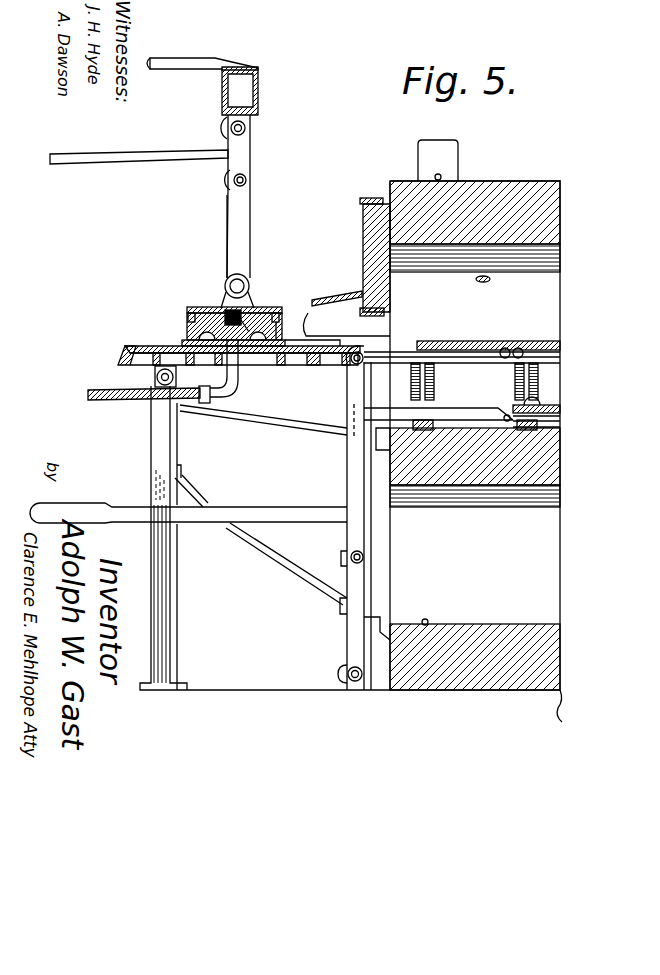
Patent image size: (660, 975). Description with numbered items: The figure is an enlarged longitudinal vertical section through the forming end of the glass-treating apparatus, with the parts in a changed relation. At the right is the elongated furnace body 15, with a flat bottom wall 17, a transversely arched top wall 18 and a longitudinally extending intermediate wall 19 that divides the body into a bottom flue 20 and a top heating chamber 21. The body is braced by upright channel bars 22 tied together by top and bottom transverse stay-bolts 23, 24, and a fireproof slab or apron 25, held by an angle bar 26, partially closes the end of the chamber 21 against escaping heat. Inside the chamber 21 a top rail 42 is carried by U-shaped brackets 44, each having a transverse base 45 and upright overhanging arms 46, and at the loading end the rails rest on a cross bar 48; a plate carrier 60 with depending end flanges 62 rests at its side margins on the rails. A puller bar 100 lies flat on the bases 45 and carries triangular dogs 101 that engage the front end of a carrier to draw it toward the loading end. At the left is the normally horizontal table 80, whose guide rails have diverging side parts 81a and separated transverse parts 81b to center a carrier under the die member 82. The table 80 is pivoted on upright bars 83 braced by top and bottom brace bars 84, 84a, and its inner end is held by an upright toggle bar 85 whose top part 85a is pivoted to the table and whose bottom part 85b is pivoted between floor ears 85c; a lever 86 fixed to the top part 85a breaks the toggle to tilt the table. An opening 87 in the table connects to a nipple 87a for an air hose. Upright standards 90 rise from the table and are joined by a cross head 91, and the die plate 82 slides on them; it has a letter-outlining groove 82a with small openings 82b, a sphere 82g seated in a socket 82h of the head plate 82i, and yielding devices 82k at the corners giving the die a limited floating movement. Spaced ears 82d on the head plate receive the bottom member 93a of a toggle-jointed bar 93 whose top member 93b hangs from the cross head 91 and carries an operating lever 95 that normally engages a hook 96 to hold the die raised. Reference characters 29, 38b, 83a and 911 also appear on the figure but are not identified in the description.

The furnace body 15 is at (521, 181).
The bottom wall 17 is at (486, 625).
The top wall 18 is at (561, 216).
The intermediate wall 19 is at (561, 456).
The bottom flue 20 is at (475, 513).
The top heating compartment or chamber 21 is at (475, 277).
The upright channel bars 22 is at (445, 140).
The top transverse stay-bolt 23 is at (442, 177).
The bottom transverse stay-bolt 24 is at (425, 619).
The fire proof slab or apron 25 is at (364, 219).
The angle bar 26 is at (371, 198).
The bracket bar 29 is at (340, 298).
The stud 38b is at (477, 281).
The top rail 42 is at (471, 360).
The U-shaped bracket 44 is at (436, 378).
The transverse base 45 is at (432, 420).
The upright overhanging arms 46 is at (436, 380).
The cross bar 48 is at (388, 410).
The plate carrier 60 is at (562, 345).
The end flange 62 is at (511, 348).
The table 80 is at (142, 344).
The side parts of guide bars 81a is at (301, 340).
The transverse parts of guide bars 81b is at (182, 341).
The die plate 82 is at (190, 310).
The groove 82a is at (205, 307).
The small openings 82b is at (291, 298).
The spaced ears 82d is at (221, 312).
The sphere 82g is at (220, 362).
The socket 82h is at (246, 308).
The head plate 82i is at (256, 328).
The yielding devices 82k is at (295, 330).
The upright bars 83 is at (151, 450).
The bar 83a is at (117, 400).
The top brace bar 84 is at (297, 430).
The bottom brace bar 84a is at (290, 568).
The toggle bar 85 is at (330, 495).
The top part of toggle bar 85a is at (352, 461).
The bottom part of toggle bar 85b is at (347, 610).
The ears 85c is at (347, 671).
The lever 86 is at (230, 523).
The opening 87 is at (244, 372).
The nipple 87a is at (212, 397).
The upright standards 90 is at (227, 209).
The cross head 91 is at (258, 89).
The pivot pin 911 is at (246, 127).
The toggle jointed bar 93 is at (247, 210).
The bottom member of toggle jointed bar 93a is at (250, 251).
The top member of toggle jointed bar 93b is at (250, 160).
The operating lever 95 is at (169, 152).
The hook 96 is at (186, 62).
The puller bar 100 is at (562, 421).
The triangular dogs 101 is at (505, 414).